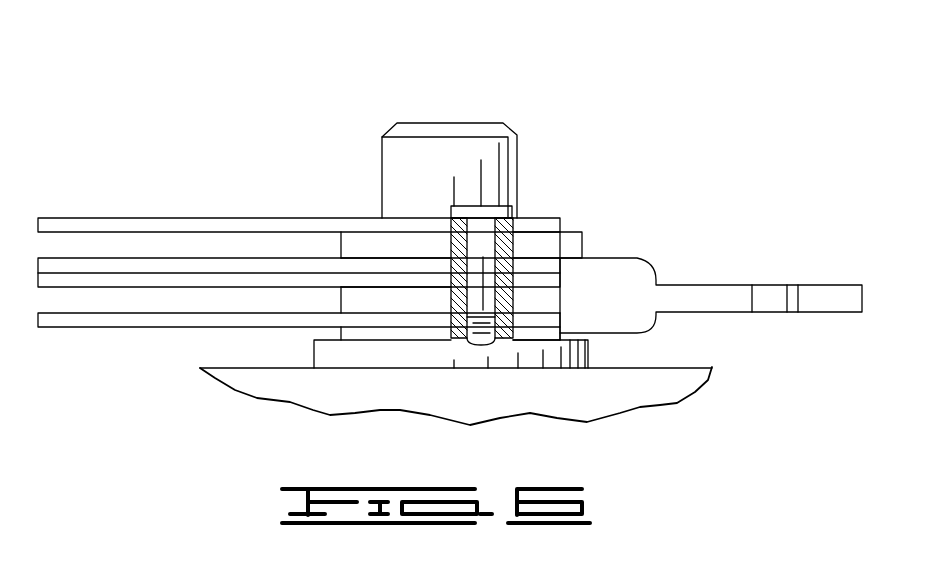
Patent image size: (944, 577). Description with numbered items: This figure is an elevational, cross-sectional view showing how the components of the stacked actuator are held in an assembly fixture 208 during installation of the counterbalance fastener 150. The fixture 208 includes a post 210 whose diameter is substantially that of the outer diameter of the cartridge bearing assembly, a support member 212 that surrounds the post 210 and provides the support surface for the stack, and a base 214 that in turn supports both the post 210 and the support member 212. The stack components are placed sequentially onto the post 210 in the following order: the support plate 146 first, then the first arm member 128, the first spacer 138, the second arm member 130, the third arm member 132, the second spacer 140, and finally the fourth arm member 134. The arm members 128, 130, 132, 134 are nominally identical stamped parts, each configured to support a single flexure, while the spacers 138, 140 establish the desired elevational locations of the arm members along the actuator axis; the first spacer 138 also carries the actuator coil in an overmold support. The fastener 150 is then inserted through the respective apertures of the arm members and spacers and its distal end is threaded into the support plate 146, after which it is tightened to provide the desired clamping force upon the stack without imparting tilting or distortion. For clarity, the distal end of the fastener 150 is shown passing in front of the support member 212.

The first arm member 128 is at (110, 330).
The second arm member 130 is at (172, 288).
The third arm member 132 is at (135, 258).
The fourth arm member 134 is at (87, 218).
The first spacer 138 is at (638, 272).
The second spacer 140 is at (548, 243).
The support plate 146 is at (357, 335).
The counterbalance fastener 150 is at (487, 208).
The assembly fixture 208 is at (326, 97).
The post 210 is at (468, 123).
The support member 212 is at (387, 352).
The base 214 is at (613, 384).